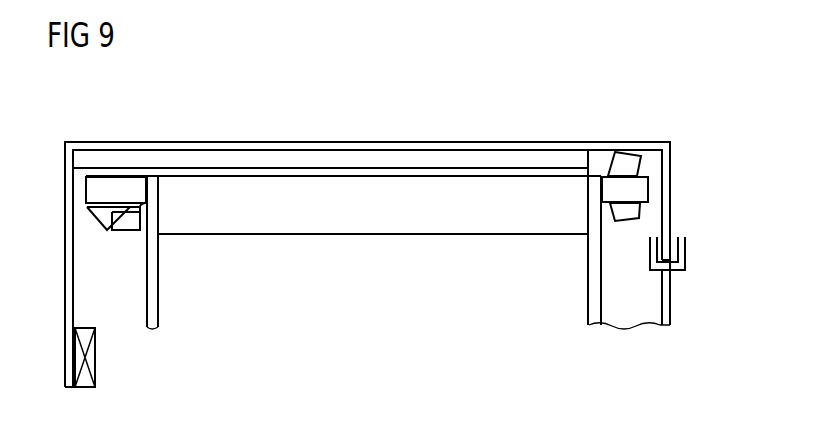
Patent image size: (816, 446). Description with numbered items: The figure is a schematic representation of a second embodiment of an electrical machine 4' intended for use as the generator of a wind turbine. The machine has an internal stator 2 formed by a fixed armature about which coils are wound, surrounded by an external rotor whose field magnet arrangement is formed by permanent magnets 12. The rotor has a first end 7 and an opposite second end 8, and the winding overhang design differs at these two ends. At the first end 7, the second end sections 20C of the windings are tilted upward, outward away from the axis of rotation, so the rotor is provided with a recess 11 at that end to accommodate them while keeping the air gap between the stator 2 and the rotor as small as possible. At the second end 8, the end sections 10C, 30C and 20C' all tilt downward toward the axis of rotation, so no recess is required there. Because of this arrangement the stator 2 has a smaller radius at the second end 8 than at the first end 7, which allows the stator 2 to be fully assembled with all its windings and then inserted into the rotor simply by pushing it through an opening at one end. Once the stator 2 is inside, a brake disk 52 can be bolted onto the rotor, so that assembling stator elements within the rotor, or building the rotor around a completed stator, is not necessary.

The second end 8 is at (59, 126).
The electrical machine 4' is at (330, 186).
The first end 7 is at (676, 120).
The recess 11 is at (600, 143).
The permanent magnets 12 is at (374, 160).
The internal stator 2 is at (375, 226).
The end section 10C is at (114, 191).
The second end section 20C is at (629, 141).
The end section 20C' is at (109, 239).
The end section 30C is at (125, 222).
The brake disk 52 is at (666, 219).